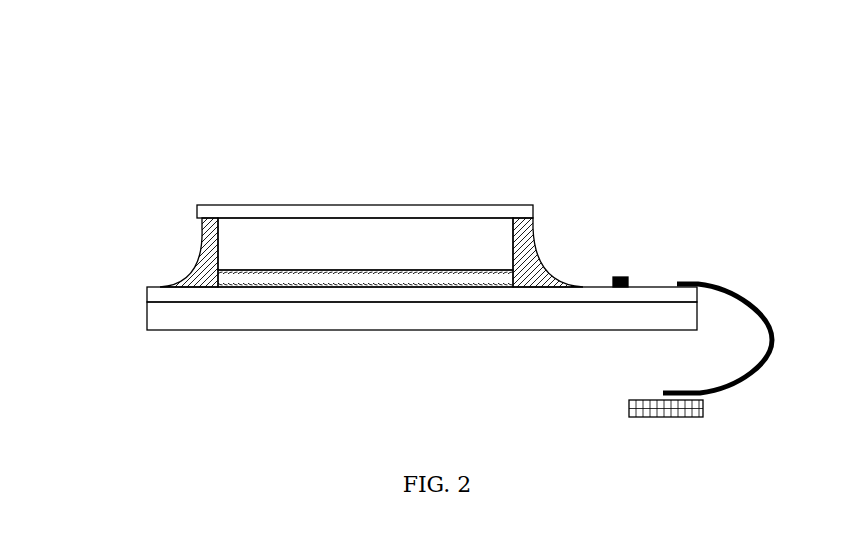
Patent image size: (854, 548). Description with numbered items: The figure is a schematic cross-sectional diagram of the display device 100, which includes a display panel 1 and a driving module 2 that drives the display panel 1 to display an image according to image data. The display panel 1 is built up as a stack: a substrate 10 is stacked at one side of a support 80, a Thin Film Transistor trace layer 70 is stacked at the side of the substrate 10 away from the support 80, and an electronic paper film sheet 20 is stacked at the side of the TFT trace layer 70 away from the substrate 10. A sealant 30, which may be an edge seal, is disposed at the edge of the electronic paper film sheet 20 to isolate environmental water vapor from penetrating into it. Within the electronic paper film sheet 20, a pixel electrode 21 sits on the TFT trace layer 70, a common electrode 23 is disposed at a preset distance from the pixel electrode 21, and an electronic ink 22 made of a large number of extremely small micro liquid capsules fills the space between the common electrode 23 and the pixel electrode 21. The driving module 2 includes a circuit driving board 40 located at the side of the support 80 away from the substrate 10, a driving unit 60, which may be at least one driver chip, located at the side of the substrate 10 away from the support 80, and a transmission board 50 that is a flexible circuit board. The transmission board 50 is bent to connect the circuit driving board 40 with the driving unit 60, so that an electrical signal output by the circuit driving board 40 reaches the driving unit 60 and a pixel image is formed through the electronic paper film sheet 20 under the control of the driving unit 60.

The display device 100 is at (417, 21).
The display panel 1 is at (65, 49).
The driving module 2 is at (711, 116).
The substrate 10 is at (145, 287).
The electronic paper film sheet 20 is at (332, 86).
The pixel electrode 21 is at (374, 272).
The electronic ink 22 is at (317, 240).
The common electrode 23 is at (262, 205).
The sealant 30 is at (198, 240).
The circuit driving board 40 is at (628, 399).
The transmission board 50 is at (733, 293).
The driving unit 60 is at (622, 278).
The Thin Film Transistor trace layer 70 is at (250, 287).
The support 80 is at (145, 327).